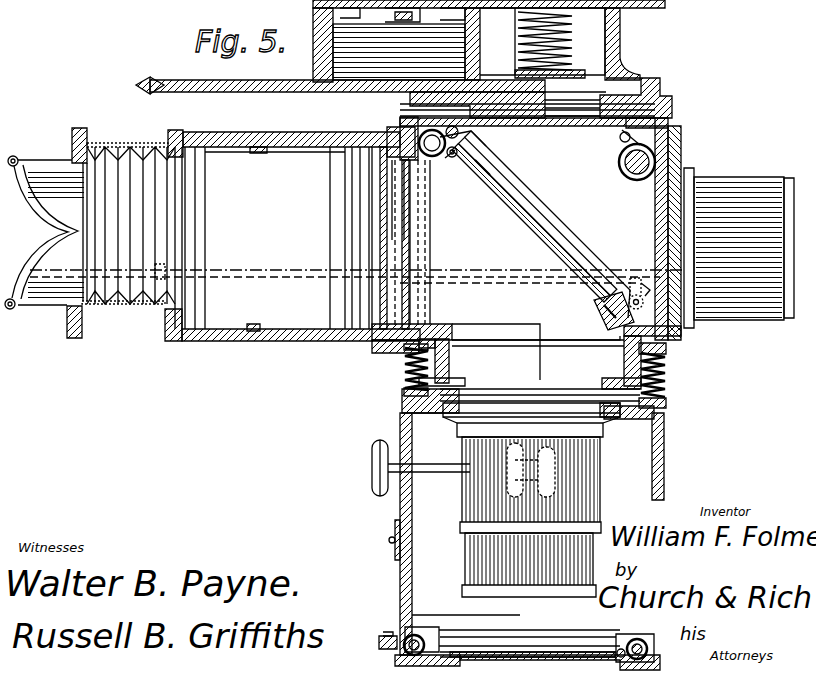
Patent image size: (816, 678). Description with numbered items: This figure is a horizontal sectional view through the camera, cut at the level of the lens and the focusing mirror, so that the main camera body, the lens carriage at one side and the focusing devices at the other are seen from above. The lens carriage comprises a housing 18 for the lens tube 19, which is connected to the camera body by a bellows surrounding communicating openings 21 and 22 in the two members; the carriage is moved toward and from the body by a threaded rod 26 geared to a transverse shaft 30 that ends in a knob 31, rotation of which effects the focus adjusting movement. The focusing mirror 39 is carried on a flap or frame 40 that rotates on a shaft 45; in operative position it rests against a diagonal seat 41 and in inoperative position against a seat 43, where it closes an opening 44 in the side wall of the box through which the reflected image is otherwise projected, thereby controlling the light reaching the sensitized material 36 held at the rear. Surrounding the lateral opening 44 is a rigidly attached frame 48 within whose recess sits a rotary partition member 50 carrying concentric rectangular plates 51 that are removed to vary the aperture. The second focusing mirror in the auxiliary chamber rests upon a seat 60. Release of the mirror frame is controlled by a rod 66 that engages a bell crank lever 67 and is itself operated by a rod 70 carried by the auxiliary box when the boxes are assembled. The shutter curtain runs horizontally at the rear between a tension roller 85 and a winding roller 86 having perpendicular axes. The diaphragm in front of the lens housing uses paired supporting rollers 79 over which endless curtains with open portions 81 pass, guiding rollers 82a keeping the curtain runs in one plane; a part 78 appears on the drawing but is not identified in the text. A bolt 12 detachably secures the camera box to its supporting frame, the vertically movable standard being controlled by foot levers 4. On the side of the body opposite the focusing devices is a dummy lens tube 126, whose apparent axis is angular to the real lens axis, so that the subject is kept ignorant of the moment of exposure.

The foot levers 4 is at (62, 231).
The bolt 12 is at (618, 322).
The lens housing 18 is at (660, 458).
The lens tube 19 is at (530, 517).
The communicating opening 21 is at (593, 402).
The communicating opening 22 is at (550, 386).
The rod 26 is at (404, 376).
The shaft 30 is at (442, 470).
The knob 31 is at (375, 478).
The sensitized material 36 is at (573, 88).
The focusing mirror 39 is at (526, 230).
The flap or frame 40 is at (487, 171).
The diagonal seat 41 is at (560, 246).
The seat 43 is at (449, 353).
The opening 44 is at (420, 314).
The shaft 45 is at (476, 138).
The frame 48 is at (412, 100).
The rotary partition member 50 is at (410, 163).
The rectangular plates 51 is at (396, 192).
The seat 60 is at (270, 152).
The rod 66 is at (512, 284).
The bell crank lever 67 is at (641, 280).
The rod 70 is at (218, 280).
The housing bottom 78 is at (405, 612).
The supports 79 is at (395, 640).
The open portions 81 is at (560, 640).
The guiding rollers 82a is at (445, 634).
The tension roller 85 is at (456, 131).
The winding roller 86 is at (630, 180).
The dummy lens tube 126 is at (774, 243).